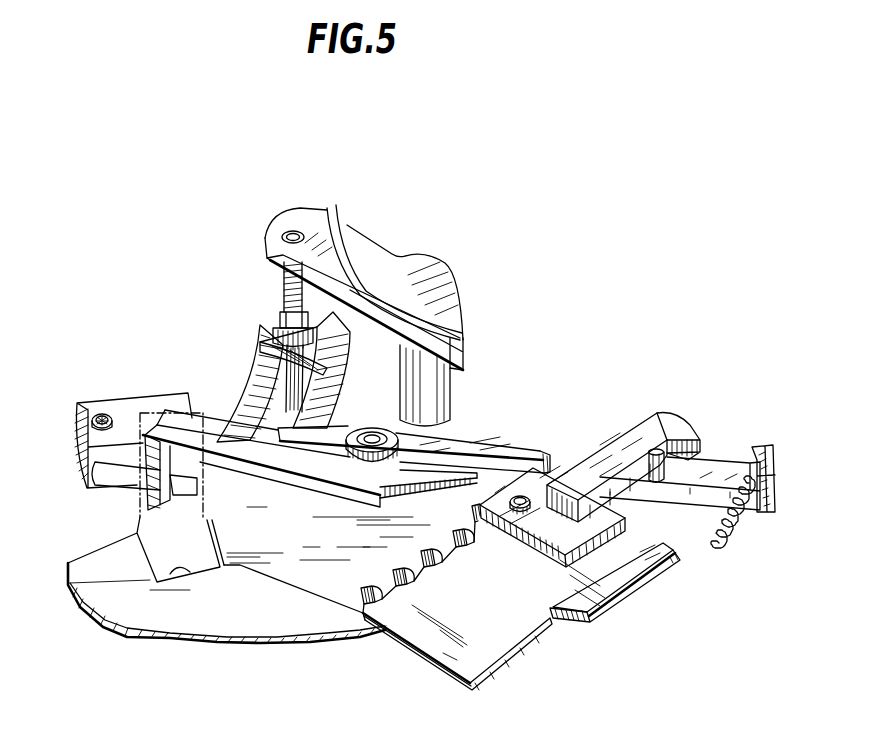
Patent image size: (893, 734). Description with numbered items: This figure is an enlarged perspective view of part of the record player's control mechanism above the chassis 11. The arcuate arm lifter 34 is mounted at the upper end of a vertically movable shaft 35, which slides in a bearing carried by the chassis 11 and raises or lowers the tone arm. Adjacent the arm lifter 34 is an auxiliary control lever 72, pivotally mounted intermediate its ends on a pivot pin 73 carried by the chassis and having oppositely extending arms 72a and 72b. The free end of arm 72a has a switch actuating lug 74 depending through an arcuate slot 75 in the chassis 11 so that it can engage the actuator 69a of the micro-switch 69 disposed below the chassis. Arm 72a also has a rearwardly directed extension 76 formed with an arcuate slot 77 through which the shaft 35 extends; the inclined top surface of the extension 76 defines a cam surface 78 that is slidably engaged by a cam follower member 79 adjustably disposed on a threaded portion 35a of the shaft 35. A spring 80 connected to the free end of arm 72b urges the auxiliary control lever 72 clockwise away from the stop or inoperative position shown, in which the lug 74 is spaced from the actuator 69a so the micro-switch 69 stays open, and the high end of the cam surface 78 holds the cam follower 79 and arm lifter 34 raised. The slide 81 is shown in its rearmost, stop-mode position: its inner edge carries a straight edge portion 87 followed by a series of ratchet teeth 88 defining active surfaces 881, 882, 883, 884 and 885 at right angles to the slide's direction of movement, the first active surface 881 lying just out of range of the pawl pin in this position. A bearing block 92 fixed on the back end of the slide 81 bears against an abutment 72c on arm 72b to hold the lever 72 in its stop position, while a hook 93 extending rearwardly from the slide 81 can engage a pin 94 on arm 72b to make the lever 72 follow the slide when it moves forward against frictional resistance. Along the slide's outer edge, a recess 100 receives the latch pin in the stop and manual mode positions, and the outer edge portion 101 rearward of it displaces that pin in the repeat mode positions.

The chassis 11 is at (250, 617).
The arm lifter 34 is at (403, 260).
The shaft 35 is at (283, 376).
The threaded portion 35a is at (284, 291).
The micro-switch 69 is at (120, 402).
The actuator 69a is at (190, 495).
The auxiliary control lever 72 is at (553, 423).
The arm 72a is at (293, 470).
The arm 72b is at (560, 470).
The abutment 72c is at (510, 458).
The pivot pin 73 is at (367, 445).
The switch actuating lug 74 is at (150, 505).
The arcuate slot 75 is at (172, 575).
The extension 76 is at (349, 372).
The arcuate slot 77 is at (267, 420).
The cam surface 78 is at (247, 390).
The cam follower member 79 is at (262, 341).
The spring 80 is at (747, 540).
The slide 81 is at (448, 645).
The straight edge portion 87 is at (478, 455).
The ratchet teeth 88 is at (352, 557).
The active surface 881 is at (358, 599).
The active surface 882 is at (392, 587).
The active surface 883 is at (426, 568).
The active surface 884 is at (460, 547).
The active surface 885 is at (480, 511).
The bearing block 92 is at (590, 533).
The hook 93 is at (673, 418).
The pin 94 is at (650, 482).
The recess 100 is at (507, 643).
The outer edge portion 101 is at (607, 610).